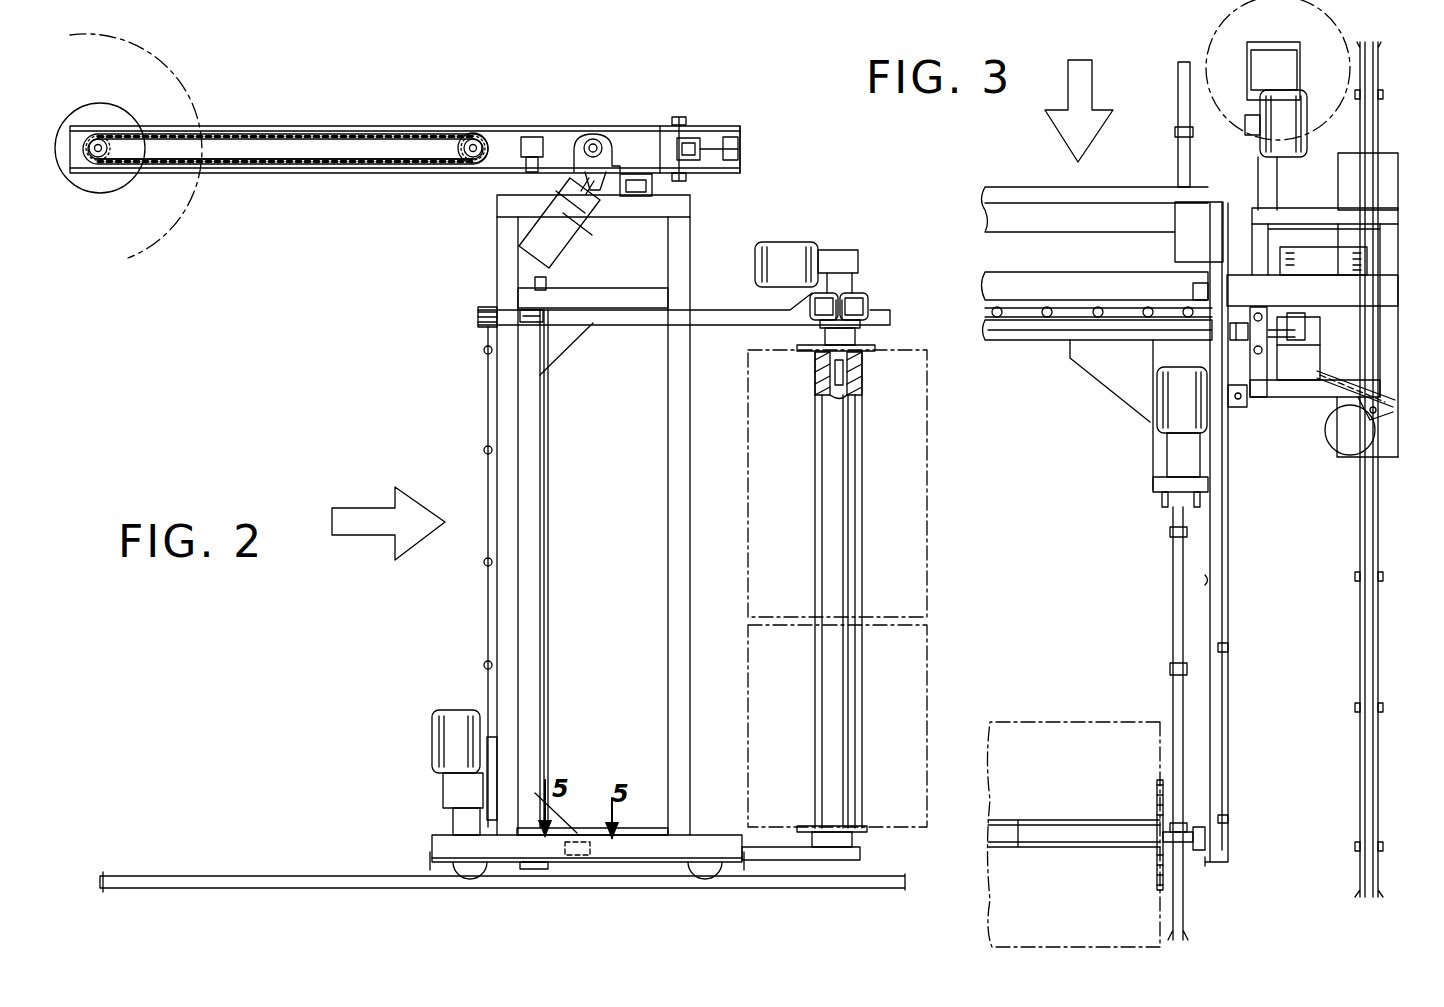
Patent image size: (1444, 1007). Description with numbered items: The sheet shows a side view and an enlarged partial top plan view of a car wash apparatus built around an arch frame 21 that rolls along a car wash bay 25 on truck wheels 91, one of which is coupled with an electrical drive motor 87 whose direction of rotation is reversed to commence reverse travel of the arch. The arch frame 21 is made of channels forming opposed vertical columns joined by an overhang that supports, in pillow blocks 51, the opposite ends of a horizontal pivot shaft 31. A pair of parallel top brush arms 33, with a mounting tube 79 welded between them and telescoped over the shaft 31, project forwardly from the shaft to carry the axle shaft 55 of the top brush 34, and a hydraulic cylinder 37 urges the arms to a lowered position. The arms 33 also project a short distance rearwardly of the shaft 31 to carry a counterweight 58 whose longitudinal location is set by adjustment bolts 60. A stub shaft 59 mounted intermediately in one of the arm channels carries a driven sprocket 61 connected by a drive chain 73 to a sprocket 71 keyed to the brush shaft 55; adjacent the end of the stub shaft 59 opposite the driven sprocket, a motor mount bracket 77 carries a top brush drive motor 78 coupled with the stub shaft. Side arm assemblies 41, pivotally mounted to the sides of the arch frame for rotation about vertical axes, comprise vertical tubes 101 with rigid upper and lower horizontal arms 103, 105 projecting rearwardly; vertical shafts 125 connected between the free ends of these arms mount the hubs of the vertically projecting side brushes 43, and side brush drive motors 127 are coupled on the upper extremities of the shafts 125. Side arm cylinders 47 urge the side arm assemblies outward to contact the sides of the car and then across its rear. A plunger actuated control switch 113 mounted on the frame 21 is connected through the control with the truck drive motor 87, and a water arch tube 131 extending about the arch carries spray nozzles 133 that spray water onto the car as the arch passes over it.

In FIG. 2, the arch frame 21 is at (725, 195).
In FIG. 3, the arch frame 21 is at (1369, 196).
In FIG. 2, the car wash bay 25 is at (238, 770).
In FIG. 2, the horizontal pivot shaft 31 is at (594, 139).
In FIG. 3, the horizontal pivot shaft 31 is at (1283, 343).
In FIG. 2, the top brush arms 33 is at (358, 129).
In FIG. 3, the top brush arms 33 is at (1218, 630).
In FIG. 2, the top brush 34 is at (186, 73).
In FIG. 3, the top brush 34 is at (1072, 720).
In FIG. 2, the hydraulic cylinder 37 is at (520, 223).
In FIG. 2, the side arm assemblies 41 is at (719, 271).
In FIG. 2, the side brushes 43 is at (932, 456).
In FIG. 3, the side brushes 43 is at (1217, 123).
In FIG. 3, the side arm cylinders 47 is at (1329, 406).
In FIG. 3, the pillow blocks 51 is at (1265, 357).
In FIG. 2, the axle shaft 55 is at (98, 162).
In FIG. 2, the counterweight 58 is at (742, 140).
In FIG. 2, the stub shaft 59 is at (478, 140).
In FIG. 2, the adjustment bolts 60 is at (708, 137).
In FIG. 2, the driven sprocket 61 is at (459, 137).
In FIG. 2, the sprocket 71 is at (105, 136).
In FIG. 2, the drive chain 73 is at (287, 165).
In FIG. 3, the motor mount bracket 77 is at (1157, 413).
In FIG. 3, the top brush drive motor 78 is at (1157, 385).
In FIG. 3, the mounting tube 79 is at (1022, 338).
In FIG. 2, the electrical drive motor 87 is at (433, 735).
In FIG. 2, the truck wheels 91 is at (470, 877).
In FIG. 2, the vertical tubes 101 is at (549, 490).
In FIG. 2, the upper horizontal arm 103 is at (617, 295).
In FIG. 2, the lower horizontal arm 105 is at (770, 847).
In FIG. 2, the plunger actuated control switch 113 is at (570, 841).
In FIG. 2, the vertical shafts 125 is at (858, 349).
In FIG. 2, the side brush drive motors 127 is at (800, 243).
In FIG. 3, the side brush drive motors 127 is at (1285, 143).
In FIG. 2, the water arch tube 131 is at (481, 366).
In FIG. 2, the spray nozzles 133 is at (486, 562).